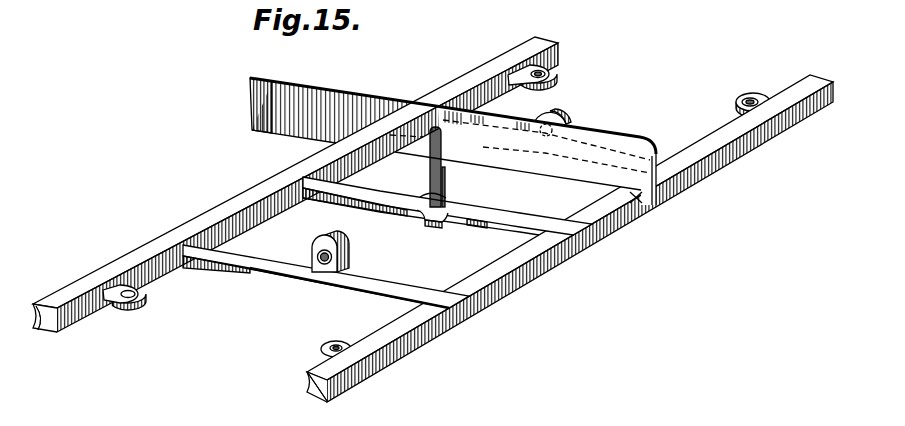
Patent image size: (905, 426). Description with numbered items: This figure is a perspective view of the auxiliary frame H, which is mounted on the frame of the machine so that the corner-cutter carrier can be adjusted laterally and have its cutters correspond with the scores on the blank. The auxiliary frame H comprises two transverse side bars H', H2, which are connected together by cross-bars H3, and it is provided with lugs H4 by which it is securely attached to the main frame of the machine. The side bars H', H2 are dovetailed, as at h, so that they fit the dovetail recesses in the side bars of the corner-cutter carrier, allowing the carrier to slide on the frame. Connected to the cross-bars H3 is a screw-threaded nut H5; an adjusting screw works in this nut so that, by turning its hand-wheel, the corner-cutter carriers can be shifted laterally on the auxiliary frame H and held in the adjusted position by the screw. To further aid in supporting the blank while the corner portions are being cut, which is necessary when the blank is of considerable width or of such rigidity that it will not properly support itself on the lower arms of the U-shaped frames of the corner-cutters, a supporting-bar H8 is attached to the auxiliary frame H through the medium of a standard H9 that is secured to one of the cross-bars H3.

The auxiliary frame H is at (570, 238).
The transverse side bar H' is at (648, 211).
The transverse side bar H2 is at (306, 164).
The cross-bars H3 is at (667, 147).
The lugs H4 is at (558, 72).
The screw-threaded nut H5 is at (554, 118).
The supporting-bar H8 is at (389, 97).
The standard H9 is at (441, 186).
The dovetail h is at (46, 327).